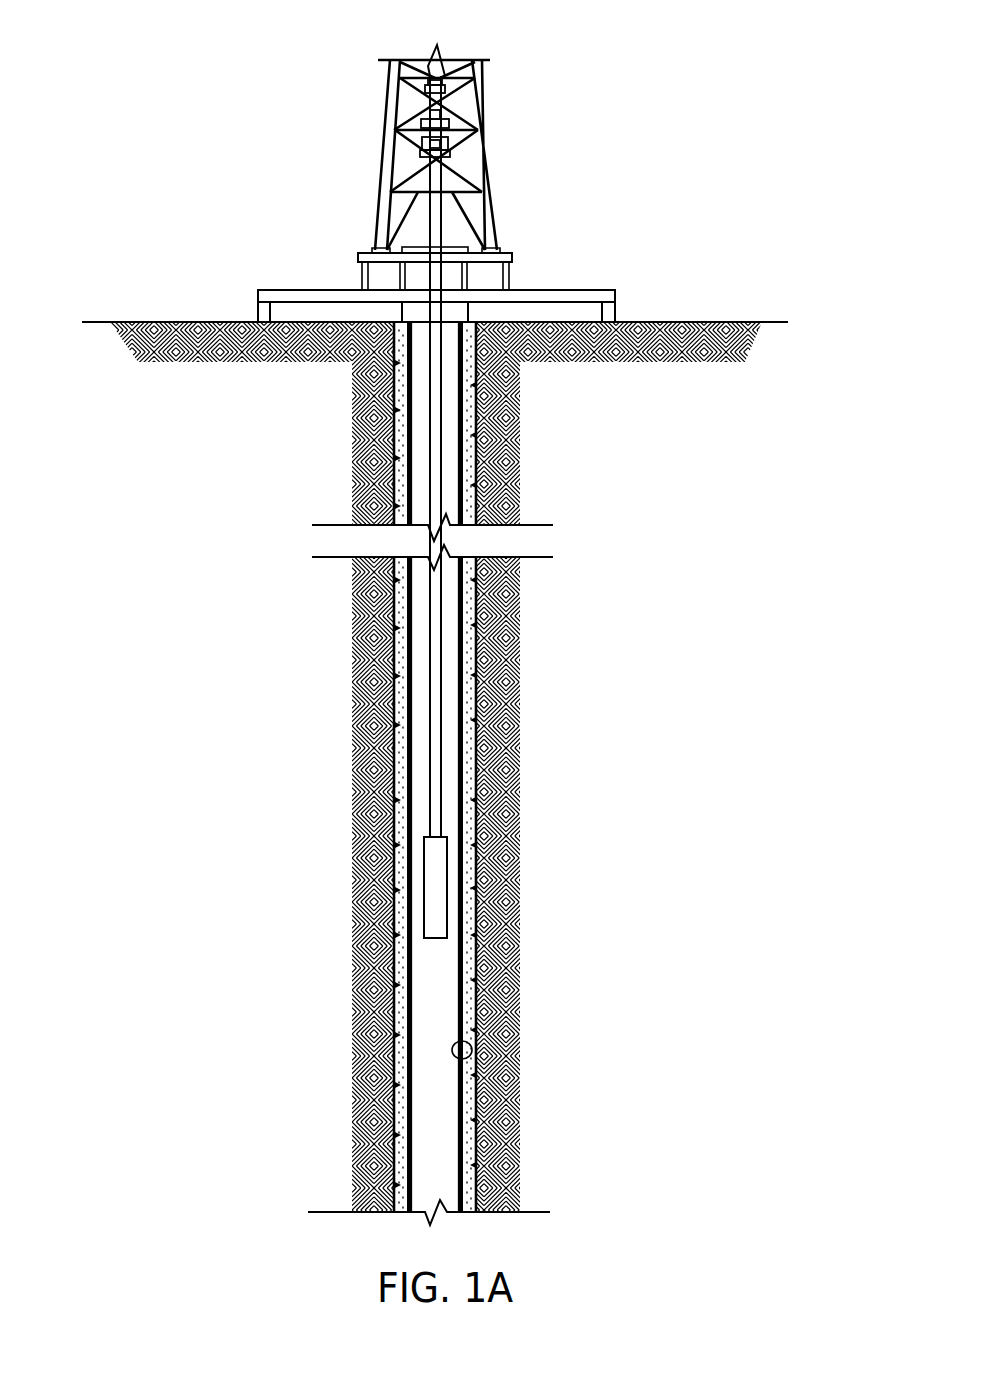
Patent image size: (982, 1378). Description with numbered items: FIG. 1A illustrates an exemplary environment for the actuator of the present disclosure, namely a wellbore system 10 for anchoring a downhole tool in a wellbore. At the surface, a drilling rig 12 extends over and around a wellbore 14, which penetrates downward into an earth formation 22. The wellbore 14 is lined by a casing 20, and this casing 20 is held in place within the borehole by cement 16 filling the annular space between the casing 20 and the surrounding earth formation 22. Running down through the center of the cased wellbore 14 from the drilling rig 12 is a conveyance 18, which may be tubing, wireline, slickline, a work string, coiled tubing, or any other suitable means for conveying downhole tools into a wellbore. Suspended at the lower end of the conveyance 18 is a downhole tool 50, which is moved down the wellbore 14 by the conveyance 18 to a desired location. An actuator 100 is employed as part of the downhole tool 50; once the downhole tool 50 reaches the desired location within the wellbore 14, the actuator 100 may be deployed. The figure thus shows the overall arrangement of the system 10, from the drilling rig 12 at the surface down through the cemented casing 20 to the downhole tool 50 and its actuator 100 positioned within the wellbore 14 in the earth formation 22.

The wellbore system 10 is at (595, 122).
The drilling rig 12 is at (383, 157).
The wellbore 14 is at (452, 667).
The cement 16 is at (469, 706).
The conveyance 18 is at (442, 753).
The downhole tool 50 is at (452, 866).
The actuator 100 is at (448, 925).
The casing 20 is at (466, 1033).
The earth formation 22 is at (492, 1100).